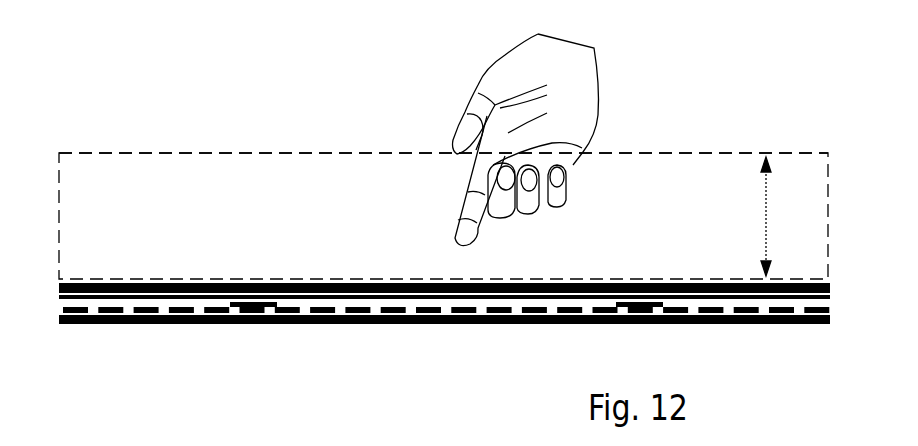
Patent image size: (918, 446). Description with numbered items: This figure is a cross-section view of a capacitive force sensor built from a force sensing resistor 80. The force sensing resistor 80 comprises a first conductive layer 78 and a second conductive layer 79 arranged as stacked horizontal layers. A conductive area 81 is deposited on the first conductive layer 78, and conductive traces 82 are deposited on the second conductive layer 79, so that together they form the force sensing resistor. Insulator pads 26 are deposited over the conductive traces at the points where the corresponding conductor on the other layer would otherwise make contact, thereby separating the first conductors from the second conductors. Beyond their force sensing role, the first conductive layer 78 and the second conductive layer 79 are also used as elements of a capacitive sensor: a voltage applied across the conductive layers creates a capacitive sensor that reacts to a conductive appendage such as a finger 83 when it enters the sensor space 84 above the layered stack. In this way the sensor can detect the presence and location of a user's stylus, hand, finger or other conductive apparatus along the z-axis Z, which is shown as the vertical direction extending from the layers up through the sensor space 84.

The force sensing resistor 80 is at (93, 137).
The sensor space 84 is at (389, 153).
The z-axis Z is at (767, 215).
The finger 83 is at (457, 229).
The first conductive layer 78 is at (103, 290).
The conductive area 81 is at (488, 296).
The conductive traces 82 is at (262, 309).
The insulator pads 26 is at (632, 306).
The second conductive layer 79 is at (78, 323).